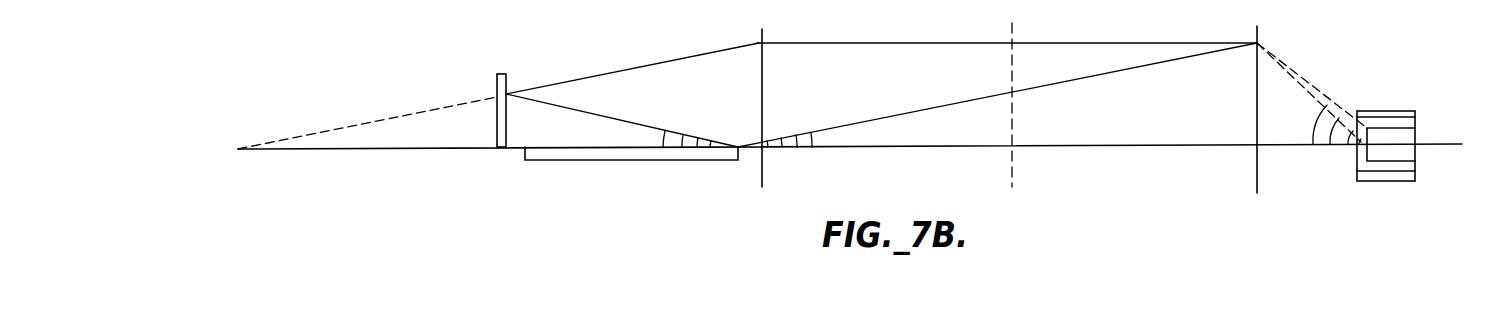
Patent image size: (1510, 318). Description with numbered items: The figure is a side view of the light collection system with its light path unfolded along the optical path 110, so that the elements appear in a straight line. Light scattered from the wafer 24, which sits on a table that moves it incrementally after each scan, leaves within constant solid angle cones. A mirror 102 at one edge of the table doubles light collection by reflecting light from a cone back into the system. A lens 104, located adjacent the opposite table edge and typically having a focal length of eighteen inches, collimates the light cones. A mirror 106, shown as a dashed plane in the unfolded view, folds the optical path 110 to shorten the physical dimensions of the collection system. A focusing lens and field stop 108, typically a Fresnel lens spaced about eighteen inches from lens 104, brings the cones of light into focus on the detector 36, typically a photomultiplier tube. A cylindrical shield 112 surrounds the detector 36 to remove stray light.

The wafer 24 is at (603, 160).
The detector 36 is at (1388, 135).
The mirror 102 is at (497, 80).
The lens 104 is at (762, 86).
The mirror 106 is at (1012, 33).
The focusing lens and field stop 108 is at (1257, 86).
The optical path 110 is at (368, 151).
The cylindrical shield 112 is at (1372, 111).